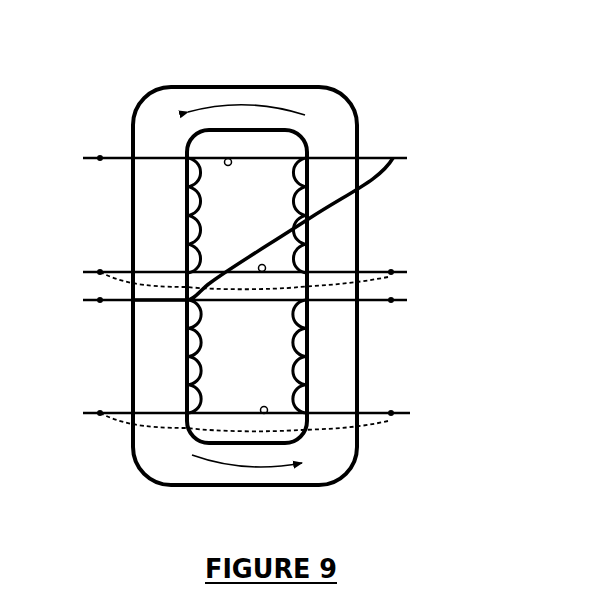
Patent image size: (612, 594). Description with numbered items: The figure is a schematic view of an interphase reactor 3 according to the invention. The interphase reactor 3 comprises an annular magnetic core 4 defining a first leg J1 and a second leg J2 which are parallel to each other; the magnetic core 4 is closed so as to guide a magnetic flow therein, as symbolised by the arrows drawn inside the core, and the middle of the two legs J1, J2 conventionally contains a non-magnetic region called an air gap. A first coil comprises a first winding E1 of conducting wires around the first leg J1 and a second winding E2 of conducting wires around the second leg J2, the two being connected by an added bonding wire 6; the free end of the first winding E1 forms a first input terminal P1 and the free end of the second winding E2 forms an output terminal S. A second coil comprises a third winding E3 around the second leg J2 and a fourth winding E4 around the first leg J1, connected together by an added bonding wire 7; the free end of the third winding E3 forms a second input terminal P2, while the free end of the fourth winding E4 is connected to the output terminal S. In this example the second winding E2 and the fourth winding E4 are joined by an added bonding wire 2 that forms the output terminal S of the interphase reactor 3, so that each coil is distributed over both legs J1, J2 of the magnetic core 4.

The bonding wire 2 is at (374, 178).
The interphase reactor 3 is at (398, 72).
The annular magnetic core 4 is at (323, 113).
The bonding wire 6 is at (388, 278).
The bonding wire 7 is at (372, 430).
The output terminal S is at (391, 158).
The first input terminal P1 is at (100, 158).
The second input terminal P2 is at (405, 300).
The first winding E1 is at (129, 215).
The second winding E2 is at (359, 215).
The third winding E3 is at (349, 356).
The fourth winding E4 is at (133, 356).
The first leg J1 is at (146, 373).
The second leg J2 is at (333, 373).